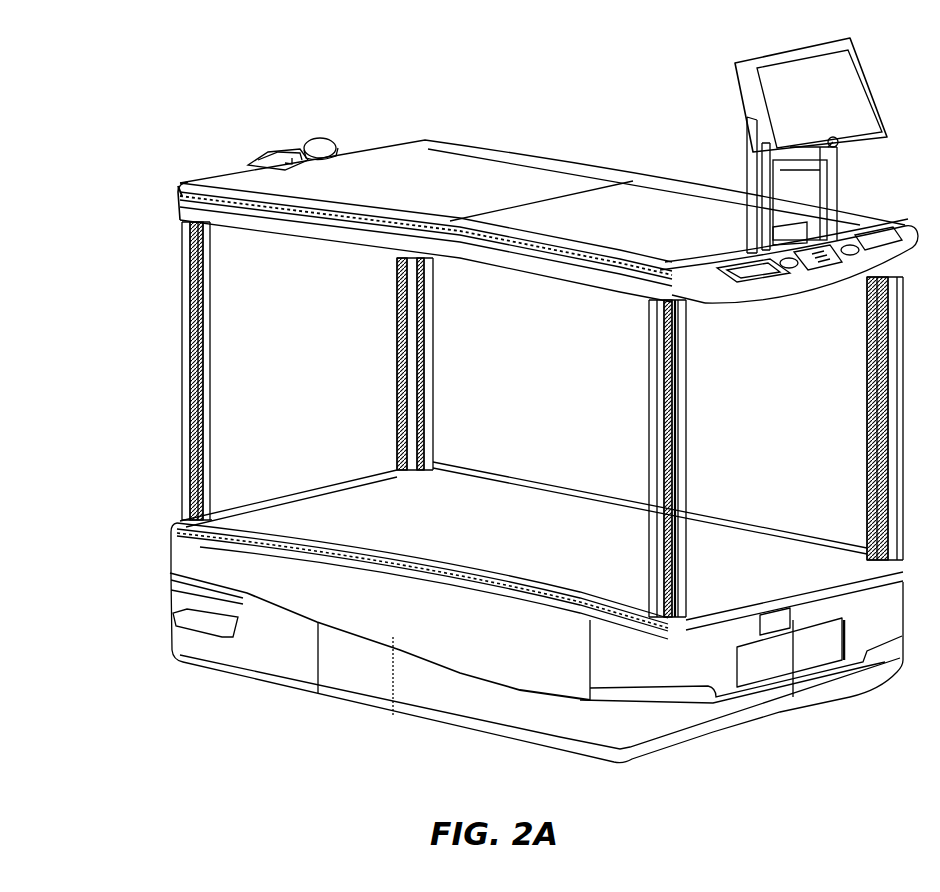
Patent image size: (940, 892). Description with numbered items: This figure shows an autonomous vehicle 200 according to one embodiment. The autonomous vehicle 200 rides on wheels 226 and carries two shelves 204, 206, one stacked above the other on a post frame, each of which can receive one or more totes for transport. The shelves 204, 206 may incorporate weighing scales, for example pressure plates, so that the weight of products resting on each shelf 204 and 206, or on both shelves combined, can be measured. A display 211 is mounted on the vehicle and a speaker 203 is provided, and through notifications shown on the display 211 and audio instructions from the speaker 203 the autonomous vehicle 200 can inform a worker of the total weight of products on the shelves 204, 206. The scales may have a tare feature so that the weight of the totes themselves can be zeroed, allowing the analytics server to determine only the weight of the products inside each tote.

The autonomous vehicle 200 is at (279, 99).
The shelf 204 is at (517, 173).
The shelf 206 is at (708, 538).
The display 211 is at (860, 83).
The speaker 203 is at (840, 142).
The wheels 226 is at (398, 712).